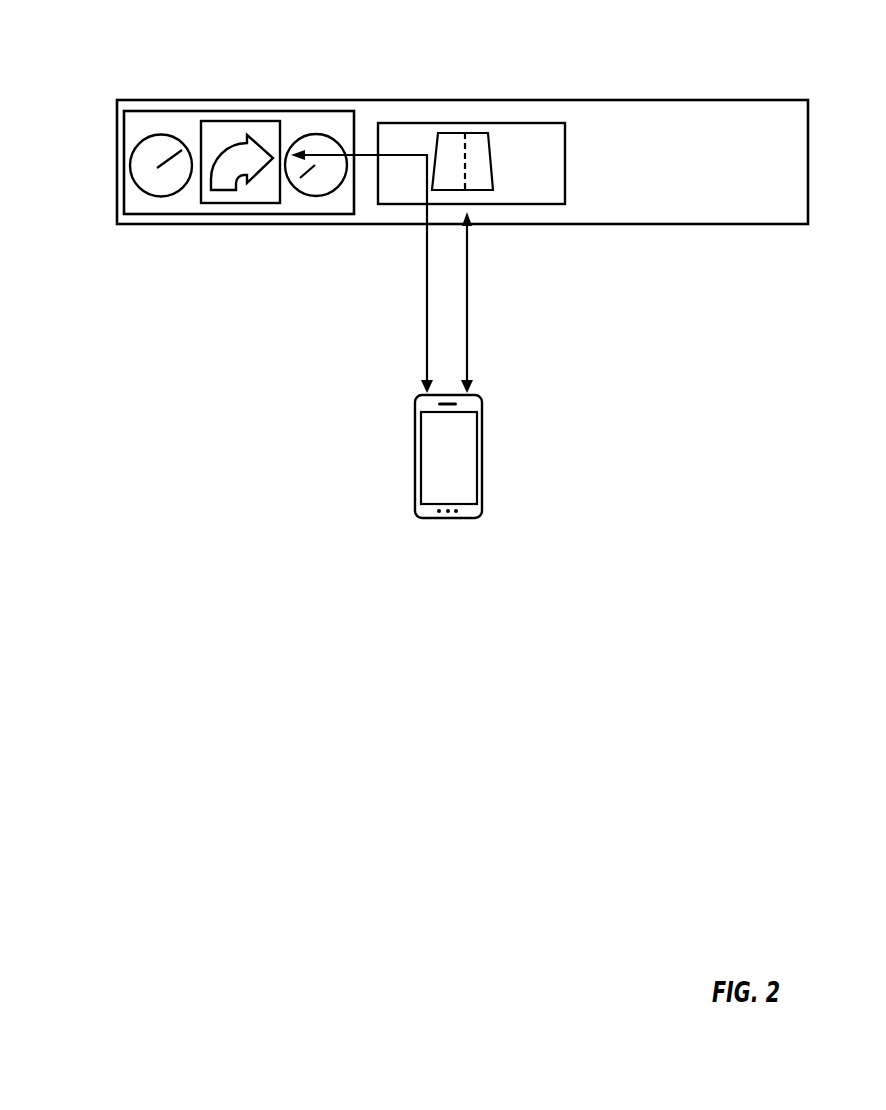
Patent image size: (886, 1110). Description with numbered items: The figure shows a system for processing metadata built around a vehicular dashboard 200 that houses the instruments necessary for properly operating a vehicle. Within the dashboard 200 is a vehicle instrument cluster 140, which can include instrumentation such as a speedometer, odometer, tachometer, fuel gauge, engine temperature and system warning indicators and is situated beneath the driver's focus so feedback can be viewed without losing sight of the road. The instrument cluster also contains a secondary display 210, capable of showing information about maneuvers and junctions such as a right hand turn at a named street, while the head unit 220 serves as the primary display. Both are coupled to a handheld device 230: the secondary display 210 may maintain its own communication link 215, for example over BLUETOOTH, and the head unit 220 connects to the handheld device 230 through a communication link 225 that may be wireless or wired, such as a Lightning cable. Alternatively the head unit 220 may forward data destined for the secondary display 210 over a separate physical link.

The vehicular dashboard 200 is at (101, 42).
The vehicle instrument cluster 140 is at (135, 123).
The secondary display 210 is at (221, 192).
The head unit 220 is at (403, 121).
The communication link 215 is at (427, 313).
The communication link 225 is at (468, 313).
The handheld device 230 is at (415, 447).